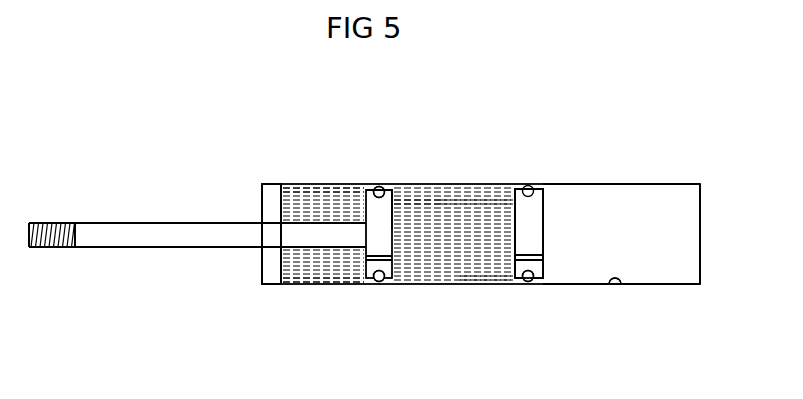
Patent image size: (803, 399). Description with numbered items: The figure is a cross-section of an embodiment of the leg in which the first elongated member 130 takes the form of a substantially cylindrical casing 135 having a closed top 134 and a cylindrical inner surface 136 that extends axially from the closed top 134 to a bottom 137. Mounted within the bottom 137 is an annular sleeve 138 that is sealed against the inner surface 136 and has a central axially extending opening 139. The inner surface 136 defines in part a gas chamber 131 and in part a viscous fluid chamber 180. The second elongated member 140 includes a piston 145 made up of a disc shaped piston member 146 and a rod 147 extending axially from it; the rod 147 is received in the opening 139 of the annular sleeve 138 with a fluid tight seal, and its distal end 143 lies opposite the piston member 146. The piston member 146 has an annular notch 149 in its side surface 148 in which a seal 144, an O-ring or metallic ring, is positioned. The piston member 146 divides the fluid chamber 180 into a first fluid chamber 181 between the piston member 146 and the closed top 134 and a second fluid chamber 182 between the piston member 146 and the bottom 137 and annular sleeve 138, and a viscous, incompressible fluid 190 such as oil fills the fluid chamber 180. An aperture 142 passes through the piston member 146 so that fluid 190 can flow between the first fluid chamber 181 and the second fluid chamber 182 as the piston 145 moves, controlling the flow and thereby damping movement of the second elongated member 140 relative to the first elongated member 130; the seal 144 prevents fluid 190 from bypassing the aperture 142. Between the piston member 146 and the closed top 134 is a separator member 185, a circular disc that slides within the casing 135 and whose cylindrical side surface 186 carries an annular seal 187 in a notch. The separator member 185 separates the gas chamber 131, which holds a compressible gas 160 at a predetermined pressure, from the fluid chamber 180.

The first elongated member 130 is at (667, 285).
The gas chamber 131 is at (692, 200).
The closed top 134 is at (700, 245).
The casing 135 is at (485, 283).
The inner surface 136 is at (607, 285).
The bottom 137 is at (262, 285).
The annular sleeve 138 is at (261, 191).
The central axially extending opening 139 is at (270, 247).
The second elongated member 140 is at (137, 244).
The aperture 142 is at (362, 268).
The distal end 143 is at (30, 238).
The seal 144 is at (380, 283).
The piston 145 is at (197, 228).
The piston member 146 is at (408, 199).
The rod 147 is at (111, 228).
The side surface 148 is at (358, 199).
The annular notch 149 is at (379, 190).
The compressible gas 160 is at (651, 198).
The viscous fluid chamber 180 is at (487, 199).
The first fluid chamber 181 is at (447, 199).
The second fluid chamber 182 is at (295, 191).
The separator member 185 is at (543, 228).
The side surface 186 is at (536, 212).
The annular seal 187 is at (528, 283).
The viscous fluid 190 is at (298, 275).